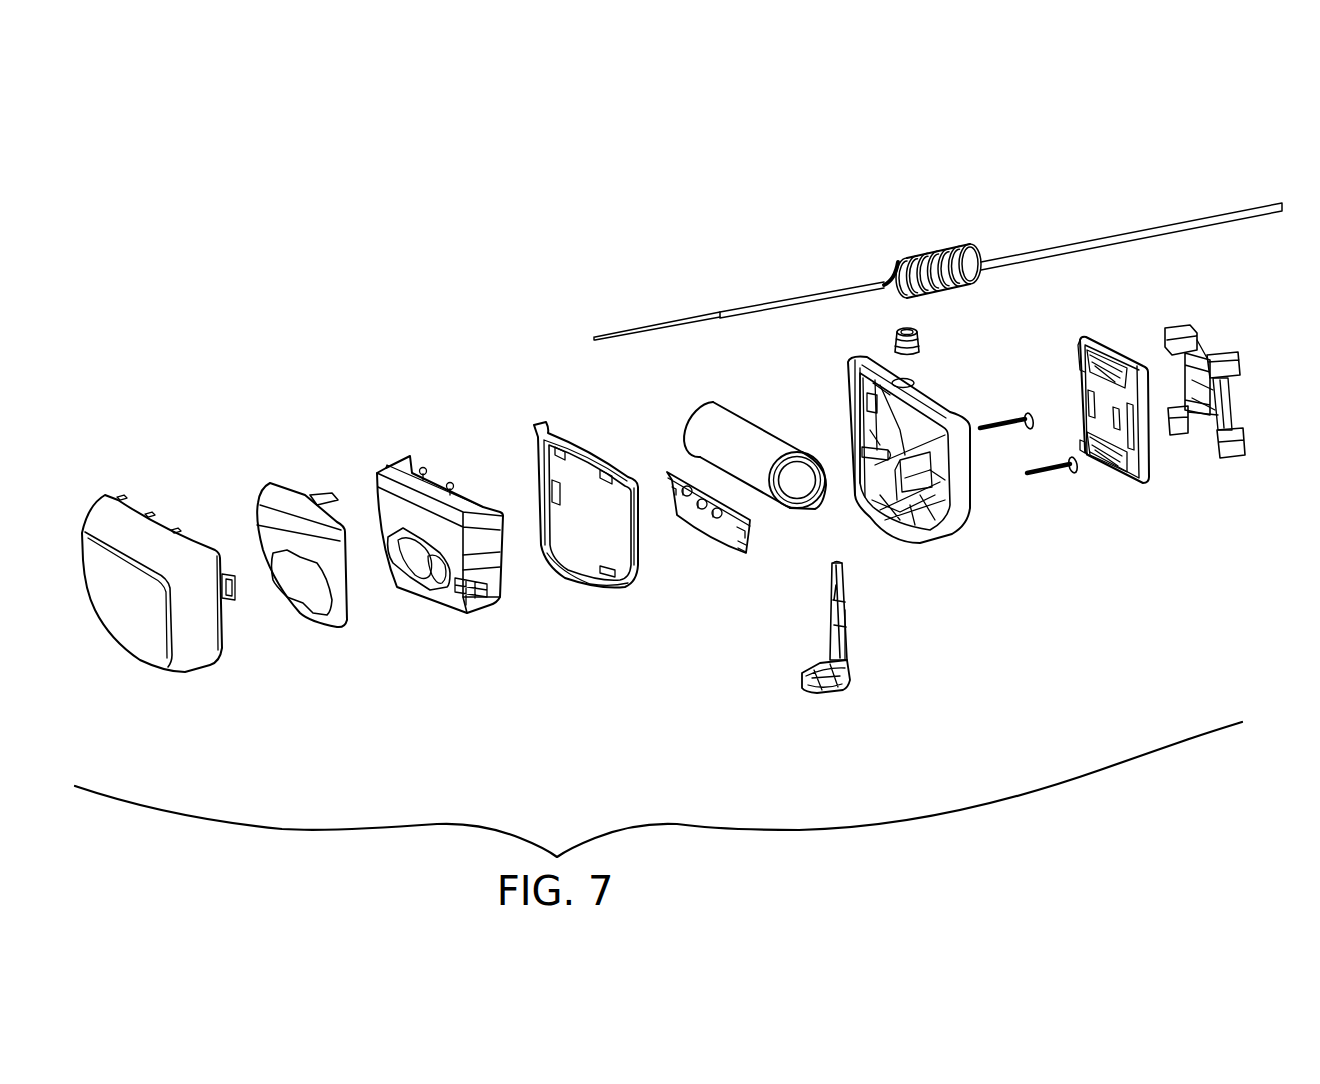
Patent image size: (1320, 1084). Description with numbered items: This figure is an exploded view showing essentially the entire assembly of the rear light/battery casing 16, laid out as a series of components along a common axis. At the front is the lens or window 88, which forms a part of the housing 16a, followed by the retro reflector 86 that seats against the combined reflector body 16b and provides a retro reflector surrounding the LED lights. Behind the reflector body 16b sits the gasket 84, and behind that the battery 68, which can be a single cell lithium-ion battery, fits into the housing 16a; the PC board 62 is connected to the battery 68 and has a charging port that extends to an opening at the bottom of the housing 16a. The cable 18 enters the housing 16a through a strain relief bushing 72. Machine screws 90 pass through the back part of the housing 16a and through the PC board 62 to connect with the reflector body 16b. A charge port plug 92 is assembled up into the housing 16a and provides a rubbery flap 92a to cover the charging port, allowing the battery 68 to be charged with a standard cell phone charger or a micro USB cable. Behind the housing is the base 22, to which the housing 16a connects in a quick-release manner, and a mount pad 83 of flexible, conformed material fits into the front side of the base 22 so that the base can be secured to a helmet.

The rear light/battery casing 16 is at (324, 338).
The housing 16a is at (947, 410).
The combined reflector body 16b is at (377, 473).
The cable 18 is at (1040, 257).
The base 22 is at (1095, 336).
The PC board 62 is at (720, 537).
The battery 68 is at (763, 423).
The strain relief bushing 72 is at (917, 335).
The mount pad 83 is at (1243, 443).
The gasket 84 is at (550, 437).
The retro reflector 86 is at (256, 540).
The lens or window 88 is at (193, 657).
The machine screws 90 is at (1007, 433).
The charge port plug 92 is at (852, 650).
The rubbery flap 92a is at (823, 693).